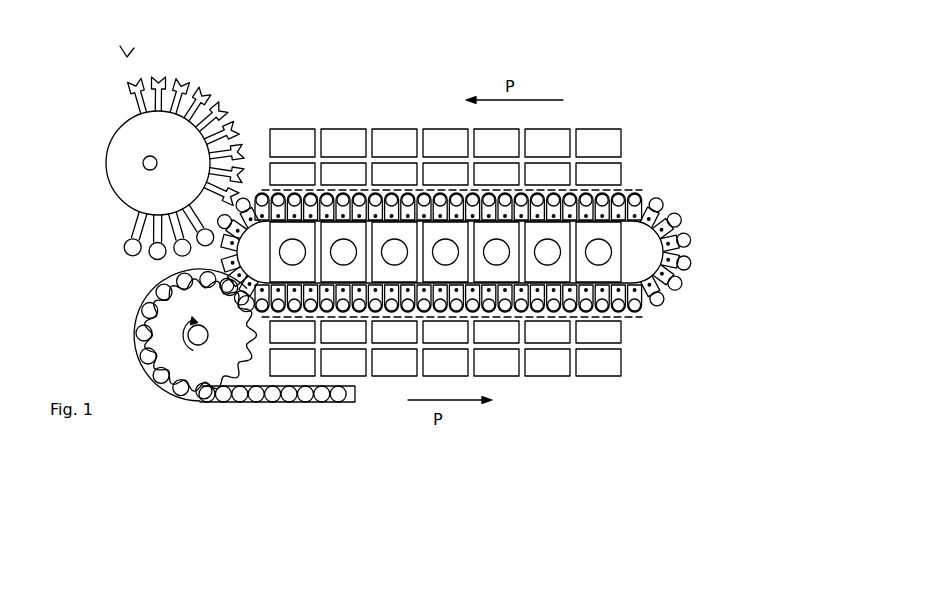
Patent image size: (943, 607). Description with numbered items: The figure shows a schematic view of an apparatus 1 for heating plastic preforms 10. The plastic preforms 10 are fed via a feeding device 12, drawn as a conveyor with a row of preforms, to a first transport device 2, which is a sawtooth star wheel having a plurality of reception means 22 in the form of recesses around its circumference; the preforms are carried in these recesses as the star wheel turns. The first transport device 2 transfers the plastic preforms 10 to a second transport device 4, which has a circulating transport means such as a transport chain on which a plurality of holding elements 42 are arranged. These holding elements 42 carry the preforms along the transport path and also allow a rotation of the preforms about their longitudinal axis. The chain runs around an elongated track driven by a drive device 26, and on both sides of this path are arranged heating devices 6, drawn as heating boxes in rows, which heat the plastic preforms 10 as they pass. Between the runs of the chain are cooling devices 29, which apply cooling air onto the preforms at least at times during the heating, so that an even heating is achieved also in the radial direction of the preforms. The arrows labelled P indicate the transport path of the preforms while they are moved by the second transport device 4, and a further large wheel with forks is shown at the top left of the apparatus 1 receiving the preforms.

The apparatus 1 is at (215, 446).
The first transport device 2 is at (115, 356).
The second transport device 4 is at (437, 239).
The heating devices 6 is at (445, 252).
The plastic preforms 10 is at (623, 199).
The feeding device 12 is at (312, 405).
The reception means 22 is at (143, 330).
The drive device 26 is at (645, 264).
The cooling device 29 is at (588, 270).
The holding elements 42 is at (280, 198).